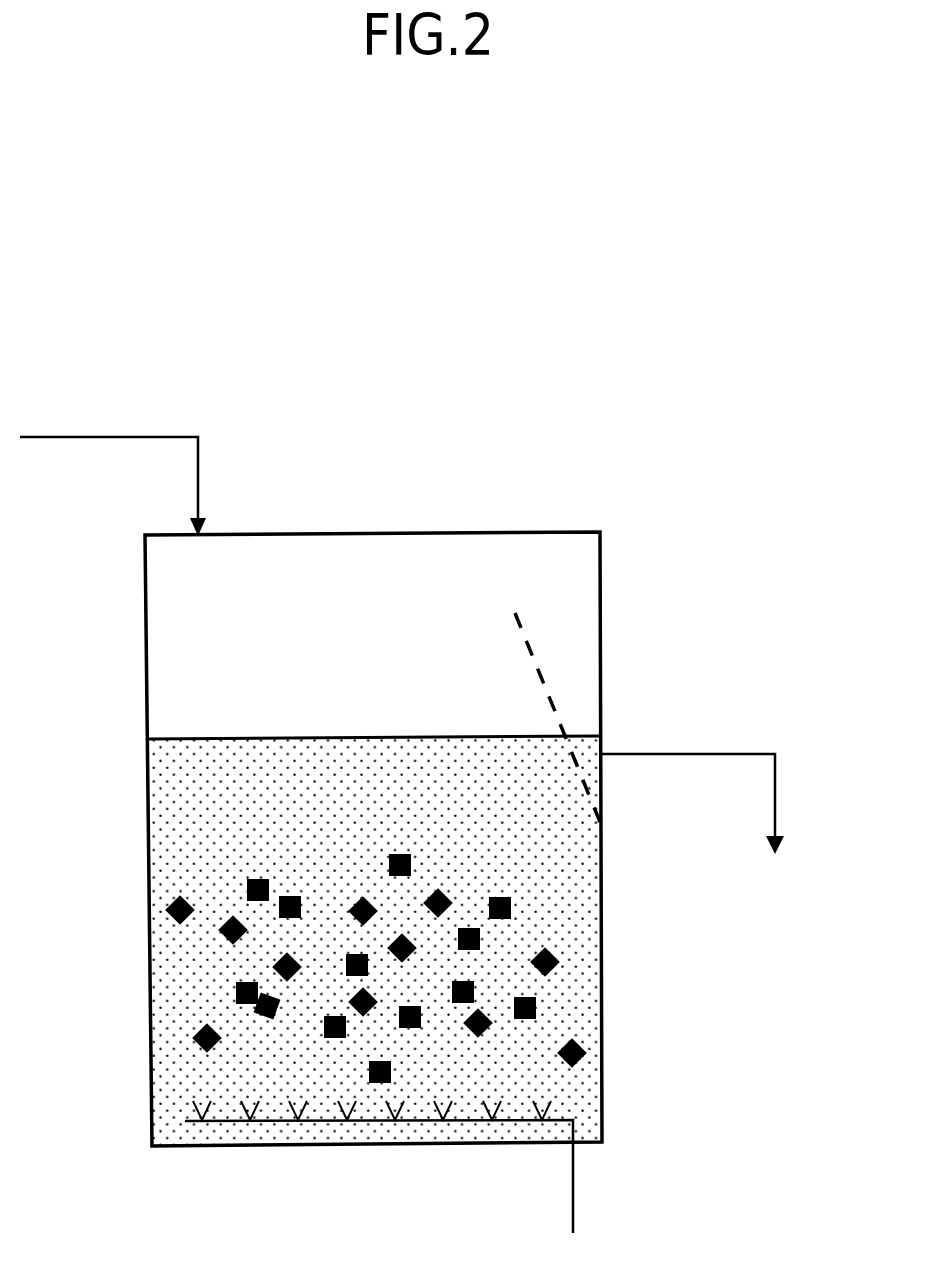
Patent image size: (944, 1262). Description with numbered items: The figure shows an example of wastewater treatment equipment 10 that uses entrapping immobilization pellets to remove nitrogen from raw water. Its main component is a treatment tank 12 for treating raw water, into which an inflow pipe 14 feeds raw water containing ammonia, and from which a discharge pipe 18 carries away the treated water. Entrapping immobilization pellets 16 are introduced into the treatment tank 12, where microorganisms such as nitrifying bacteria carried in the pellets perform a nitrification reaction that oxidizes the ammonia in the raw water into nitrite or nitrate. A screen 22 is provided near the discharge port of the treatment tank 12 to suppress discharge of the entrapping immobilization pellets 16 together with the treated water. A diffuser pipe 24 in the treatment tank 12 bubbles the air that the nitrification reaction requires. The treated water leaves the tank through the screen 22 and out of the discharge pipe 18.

The wastewater treatment equipment 10 is at (650, 317).
The treatment tank 12 is at (600, 558).
The inflow pipe 14 is at (98, 437).
The entrapping immobilization pellets 16 is at (175, 920).
The discharge pipe 18 is at (775, 790).
The screen 22 is at (553, 706).
The diffuser pipe 24 is at (573, 1187).